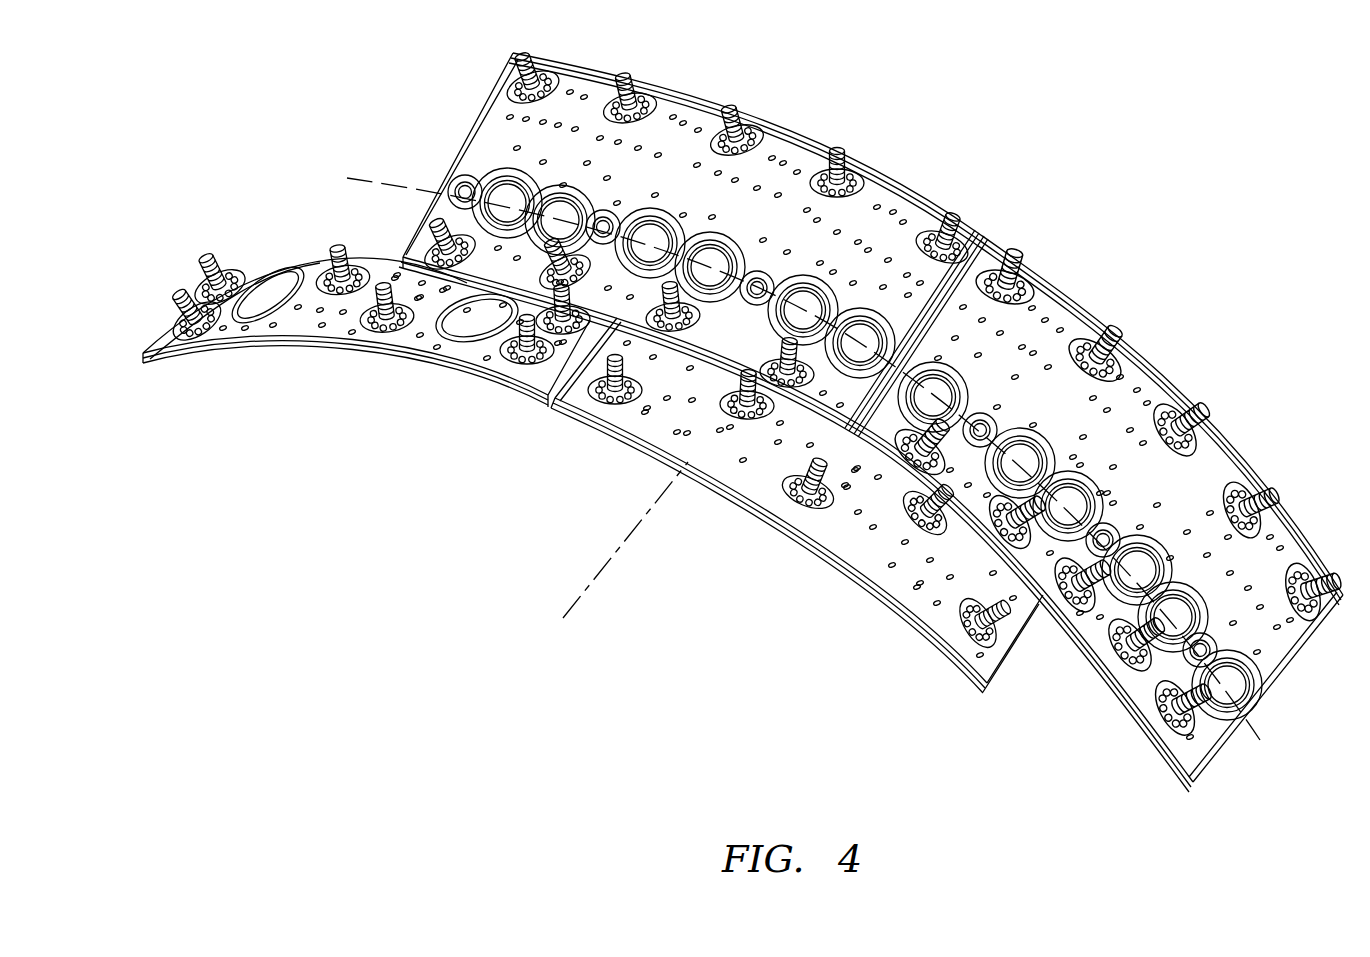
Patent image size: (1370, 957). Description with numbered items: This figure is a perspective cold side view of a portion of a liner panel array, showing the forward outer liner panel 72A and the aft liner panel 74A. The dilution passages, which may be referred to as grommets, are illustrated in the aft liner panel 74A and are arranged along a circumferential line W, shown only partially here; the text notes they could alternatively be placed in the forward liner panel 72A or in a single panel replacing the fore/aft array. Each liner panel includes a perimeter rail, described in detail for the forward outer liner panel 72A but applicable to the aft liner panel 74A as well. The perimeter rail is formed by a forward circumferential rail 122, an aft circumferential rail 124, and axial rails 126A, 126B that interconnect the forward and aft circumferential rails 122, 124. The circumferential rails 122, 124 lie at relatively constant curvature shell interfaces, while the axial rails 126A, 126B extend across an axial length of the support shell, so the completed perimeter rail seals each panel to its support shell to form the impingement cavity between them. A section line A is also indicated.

The forward outer liner panel 72A is at (623, 511).
The aft liner panel 74A is at (1284, 738).
The forward circumferential rail 122 is at (802, 527).
The aft circumferential rail 124 is at (897, 473).
The axial rail 126A is at (1020, 627).
The axial rail 126B is at (605, 365).
The circumferential line W is at (370, 178).
The section line A is at (567, 607).